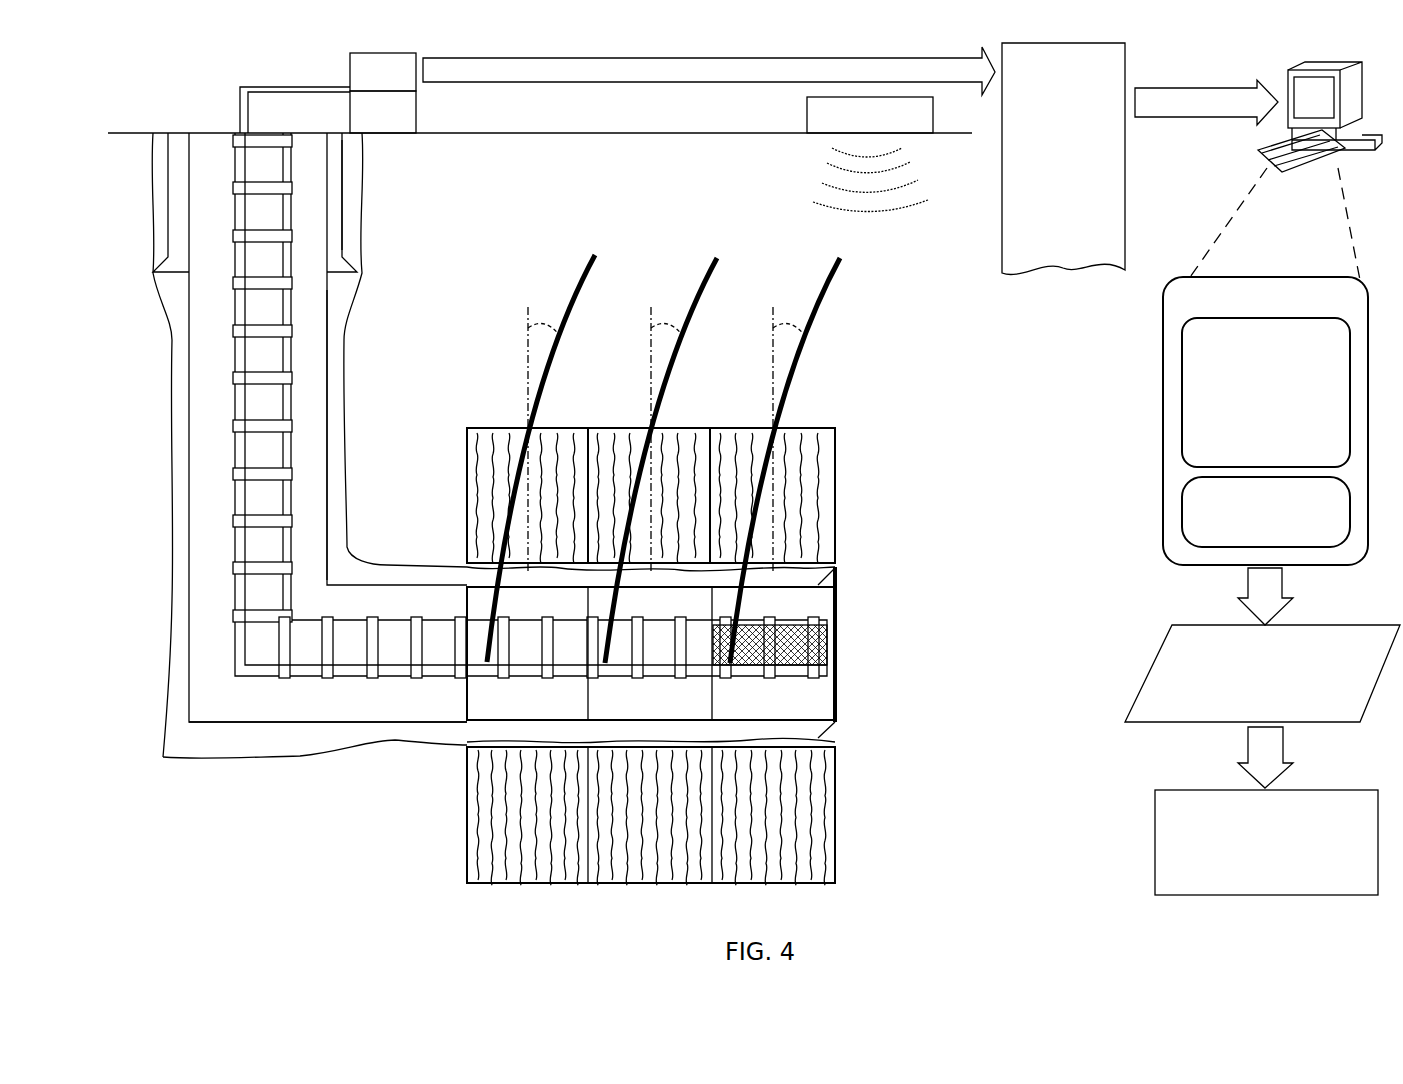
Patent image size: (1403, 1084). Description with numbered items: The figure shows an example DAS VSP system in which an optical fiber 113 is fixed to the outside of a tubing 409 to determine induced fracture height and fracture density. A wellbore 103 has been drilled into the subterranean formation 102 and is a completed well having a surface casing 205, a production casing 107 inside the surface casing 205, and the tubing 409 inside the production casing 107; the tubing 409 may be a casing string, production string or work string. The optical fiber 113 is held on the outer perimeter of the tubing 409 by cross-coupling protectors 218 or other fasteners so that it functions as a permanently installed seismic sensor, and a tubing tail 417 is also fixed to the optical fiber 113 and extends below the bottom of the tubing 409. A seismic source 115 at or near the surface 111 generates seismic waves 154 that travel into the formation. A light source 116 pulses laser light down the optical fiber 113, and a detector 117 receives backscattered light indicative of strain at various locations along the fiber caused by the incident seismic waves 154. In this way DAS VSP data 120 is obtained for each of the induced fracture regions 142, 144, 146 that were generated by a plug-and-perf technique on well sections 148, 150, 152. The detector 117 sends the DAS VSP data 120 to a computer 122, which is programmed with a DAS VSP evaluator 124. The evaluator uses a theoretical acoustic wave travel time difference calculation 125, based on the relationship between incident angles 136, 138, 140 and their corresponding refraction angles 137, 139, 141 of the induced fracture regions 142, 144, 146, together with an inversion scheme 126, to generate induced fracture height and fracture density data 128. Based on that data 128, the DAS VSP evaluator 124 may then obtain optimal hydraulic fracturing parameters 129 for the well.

The subterranean formation 102 is at (501, 195).
The wellbore 103 is at (167, 345).
The production casing 107 is at (332, 328).
The surface 111 is at (128, 133).
The optical fiber 113 is at (242, 168).
The seismic source 115 is at (855, 124).
The light source 116 is at (369, 124).
The detector 117 is at (369, 82).
The DAS VSP data 120 is at (1045, 194).
The computer 122 is at (1348, 102).
The DAS VSP evaluator 124 is at (1263, 280).
The theoretical acoustic wave travel time difference calculation 125 is at (1192, 392).
The inversion scheme 126 is at (1198, 522).
The induced fracture height and fracture density data 128 is at (1345, 713).
The optimal hydraulic fracturing parameters 129 is at (1345, 882).
The incident angle 136 is at (815, 317).
The refraction angle 137 is at (836, 548).
The incident angle 138 is at (690, 317).
The refraction angle 139 is at (640, 540).
The incident angle 140 is at (570, 316).
The refraction angle 141 is at (522, 545).
The induced fracture region 142 is at (840, 455).
The induced fracture region 144 is at (697, 430).
The induced fracture region 146 is at (498, 425).
The well section 148 is at (835, 728).
The well section 150 is at (683, 602).
The well section 152 is at (512, 708).
The seismic waves 154 is at (833, 190).
The surface casing 205 is at (338, 230).
The cross-coupling protectors 218 is at (243, 233).
The tubing 409 is at (343, 650).
The tubing tail 417 is at (790, 647).